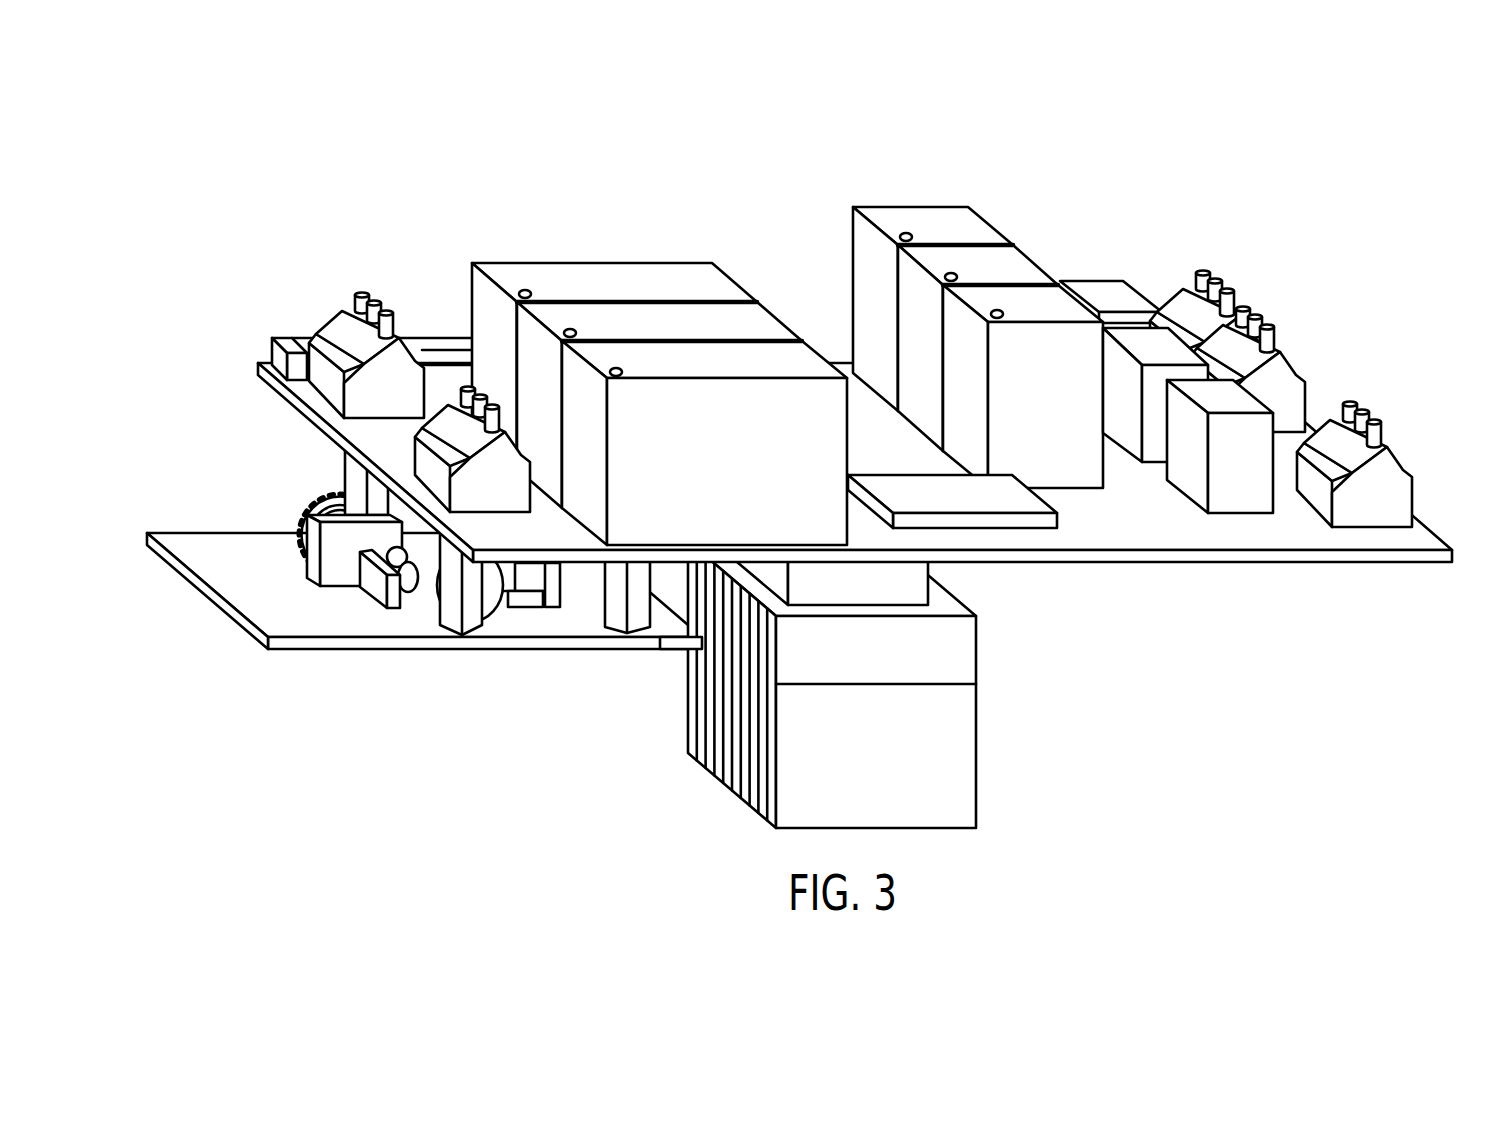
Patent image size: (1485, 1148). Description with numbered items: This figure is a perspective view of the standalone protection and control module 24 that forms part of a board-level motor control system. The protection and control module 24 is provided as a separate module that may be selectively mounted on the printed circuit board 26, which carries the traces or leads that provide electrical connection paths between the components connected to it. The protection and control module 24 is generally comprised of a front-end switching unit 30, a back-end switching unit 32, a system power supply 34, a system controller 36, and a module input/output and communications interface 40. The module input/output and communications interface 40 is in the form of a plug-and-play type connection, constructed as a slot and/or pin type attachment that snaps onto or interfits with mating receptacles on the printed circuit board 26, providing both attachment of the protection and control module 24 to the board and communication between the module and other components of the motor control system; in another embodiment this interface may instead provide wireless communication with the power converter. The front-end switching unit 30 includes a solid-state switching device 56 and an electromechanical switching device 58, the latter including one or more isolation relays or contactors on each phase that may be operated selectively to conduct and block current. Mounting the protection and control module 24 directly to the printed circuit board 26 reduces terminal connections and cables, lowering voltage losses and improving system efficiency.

The protection and control module 24 is at (1047, 126).
The printed circuit board 26 is at (1280, 533).
The front-end switching unit 30 is at (528, 224).
The back-end switching unit 32 is at (1040, 257).
The system power supply 34 is at (289, 476).
The system controller 36 is at (340, 535).
The module input/output and communications interface 40 is at (389, 577).
The solid-state switching device 56 is at (968, 587).
The electromechanical switching device 58 is at (503, 302).